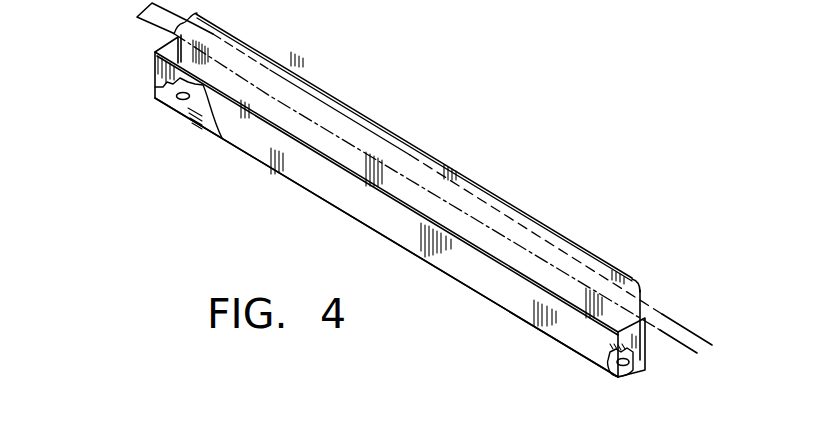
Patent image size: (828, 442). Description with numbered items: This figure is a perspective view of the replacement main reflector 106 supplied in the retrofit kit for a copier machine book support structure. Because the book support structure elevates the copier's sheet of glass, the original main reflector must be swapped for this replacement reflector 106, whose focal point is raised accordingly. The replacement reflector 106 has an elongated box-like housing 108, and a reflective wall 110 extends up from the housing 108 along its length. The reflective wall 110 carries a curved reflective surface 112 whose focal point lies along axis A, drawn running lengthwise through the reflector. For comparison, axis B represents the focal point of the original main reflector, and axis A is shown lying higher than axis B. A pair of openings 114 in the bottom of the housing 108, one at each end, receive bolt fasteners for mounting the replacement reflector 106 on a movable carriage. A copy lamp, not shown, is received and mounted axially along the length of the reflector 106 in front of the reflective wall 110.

The replacement main reflector 106 is at (318, 207).
The box-like housing 108 is at (535, 326).
The reflective wall 110 is at (565, 236).
The curved reflective surface 112 is at (413, 153).
The openings 114 is at (180, 100).
The axis A is at (693, 331).
The axis B is at (150, 15).